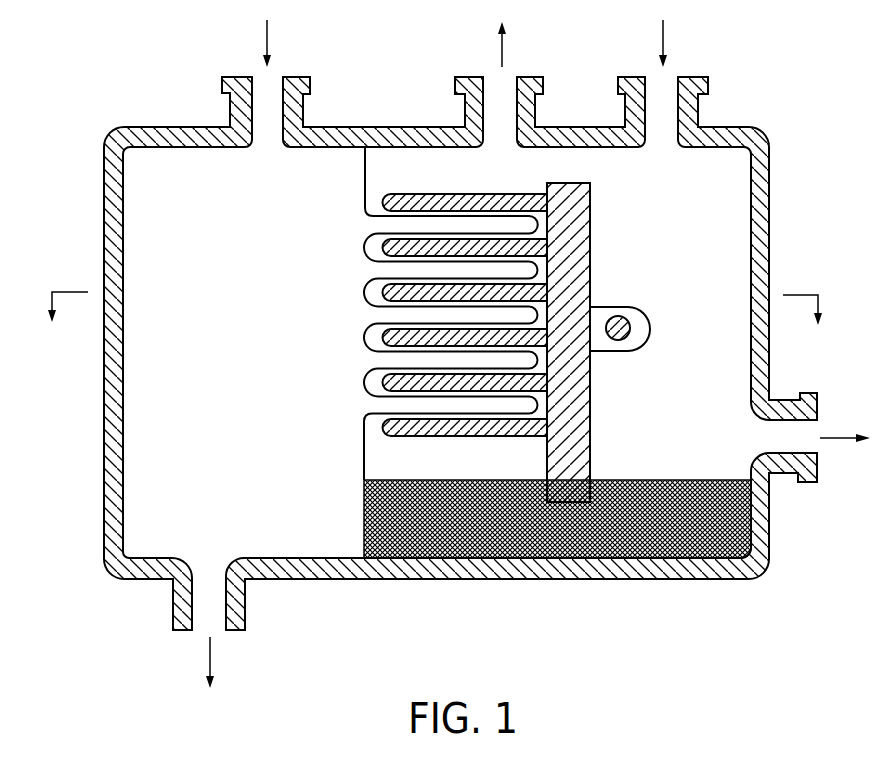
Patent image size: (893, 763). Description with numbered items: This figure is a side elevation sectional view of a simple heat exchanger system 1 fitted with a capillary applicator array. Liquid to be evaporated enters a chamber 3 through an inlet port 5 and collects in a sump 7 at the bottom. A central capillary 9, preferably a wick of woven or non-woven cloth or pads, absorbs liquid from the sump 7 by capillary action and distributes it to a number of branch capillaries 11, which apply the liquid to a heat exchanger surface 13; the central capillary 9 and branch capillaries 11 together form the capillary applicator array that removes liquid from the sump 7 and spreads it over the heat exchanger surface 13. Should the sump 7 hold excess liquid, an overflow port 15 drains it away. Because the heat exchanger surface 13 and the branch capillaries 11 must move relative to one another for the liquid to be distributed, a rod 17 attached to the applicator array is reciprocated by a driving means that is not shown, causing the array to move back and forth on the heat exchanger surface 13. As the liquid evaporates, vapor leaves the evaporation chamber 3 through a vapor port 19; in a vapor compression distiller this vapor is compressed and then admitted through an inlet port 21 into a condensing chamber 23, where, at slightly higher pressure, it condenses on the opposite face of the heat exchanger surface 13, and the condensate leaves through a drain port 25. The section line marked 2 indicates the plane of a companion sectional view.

The heat exchanger system 1 is at (730, 590).
The section line 2- 2 is at (434, 320).
The chamber 3 is at (732, 203).
The inlet port 5 is at (672, 77).
The sump 7 is at (471, 544).
The central capillary 9 is at (592, 373).
The branch capillaries 11 is at (387, 243).
The heat exchanger surface 13 is at (364, 295).
The overflow port 15 is at (818, 445).
The rod 17 is at (622, 316).
The vapor port 19 is at (508, 77).
The inlet port 21 is at (275, 77).
The condensing chamber 23 is at (175, 377).
The drain port 25 is at (218, 632).